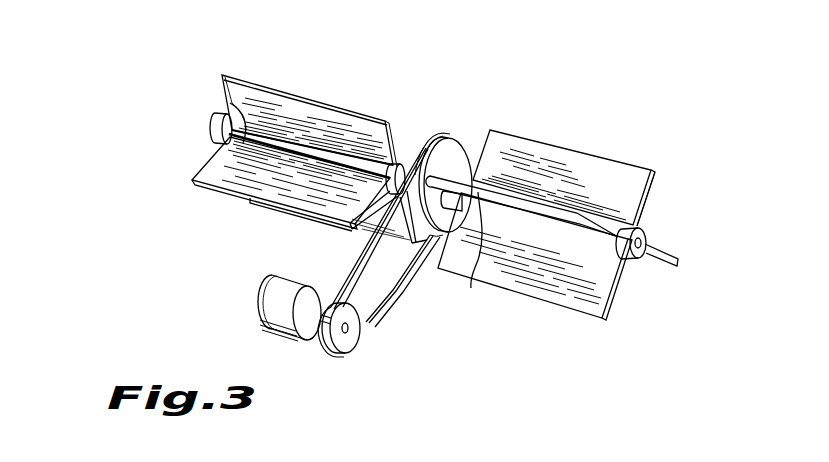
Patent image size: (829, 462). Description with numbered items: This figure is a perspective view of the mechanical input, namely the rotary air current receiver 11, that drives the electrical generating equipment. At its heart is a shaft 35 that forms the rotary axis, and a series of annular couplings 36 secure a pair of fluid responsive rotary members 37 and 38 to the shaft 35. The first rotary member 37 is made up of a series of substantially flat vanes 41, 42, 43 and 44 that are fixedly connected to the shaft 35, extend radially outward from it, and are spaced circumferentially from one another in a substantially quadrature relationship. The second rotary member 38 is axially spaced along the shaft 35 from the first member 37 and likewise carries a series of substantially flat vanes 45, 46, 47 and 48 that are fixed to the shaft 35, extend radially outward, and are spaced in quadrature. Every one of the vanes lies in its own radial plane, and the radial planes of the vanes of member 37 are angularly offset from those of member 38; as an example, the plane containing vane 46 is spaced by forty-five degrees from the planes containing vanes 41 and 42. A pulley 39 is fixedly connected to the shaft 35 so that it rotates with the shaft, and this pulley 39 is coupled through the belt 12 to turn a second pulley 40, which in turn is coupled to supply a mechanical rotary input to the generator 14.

The rotary air current receiver 11 is at (649, 134).
The belt 12 is at (387, 297).
The generator 14 is at (262, 327).
The shaft 35 is at (230, 103).
The annular couplings 36 is at (211, 128).
The fluid responsive rotary member 37 is at (354, 94).
The fluid responsive rotary member 38 is at (575, 149).
The pulley 39 is at (457, 153).
The pulley 40 is at (333, 351).
The vane 41 is at (263, 93).
The vane 42 is at (217, 167).
The vane 43 is at (367, 222).
The vane 44 is at (420, 140).
The vane 45 is at (627, 177).
The vane 46 is at (471, 287).
The vane 47 is at (550, 290).
The vane 48 is at (657, 263).